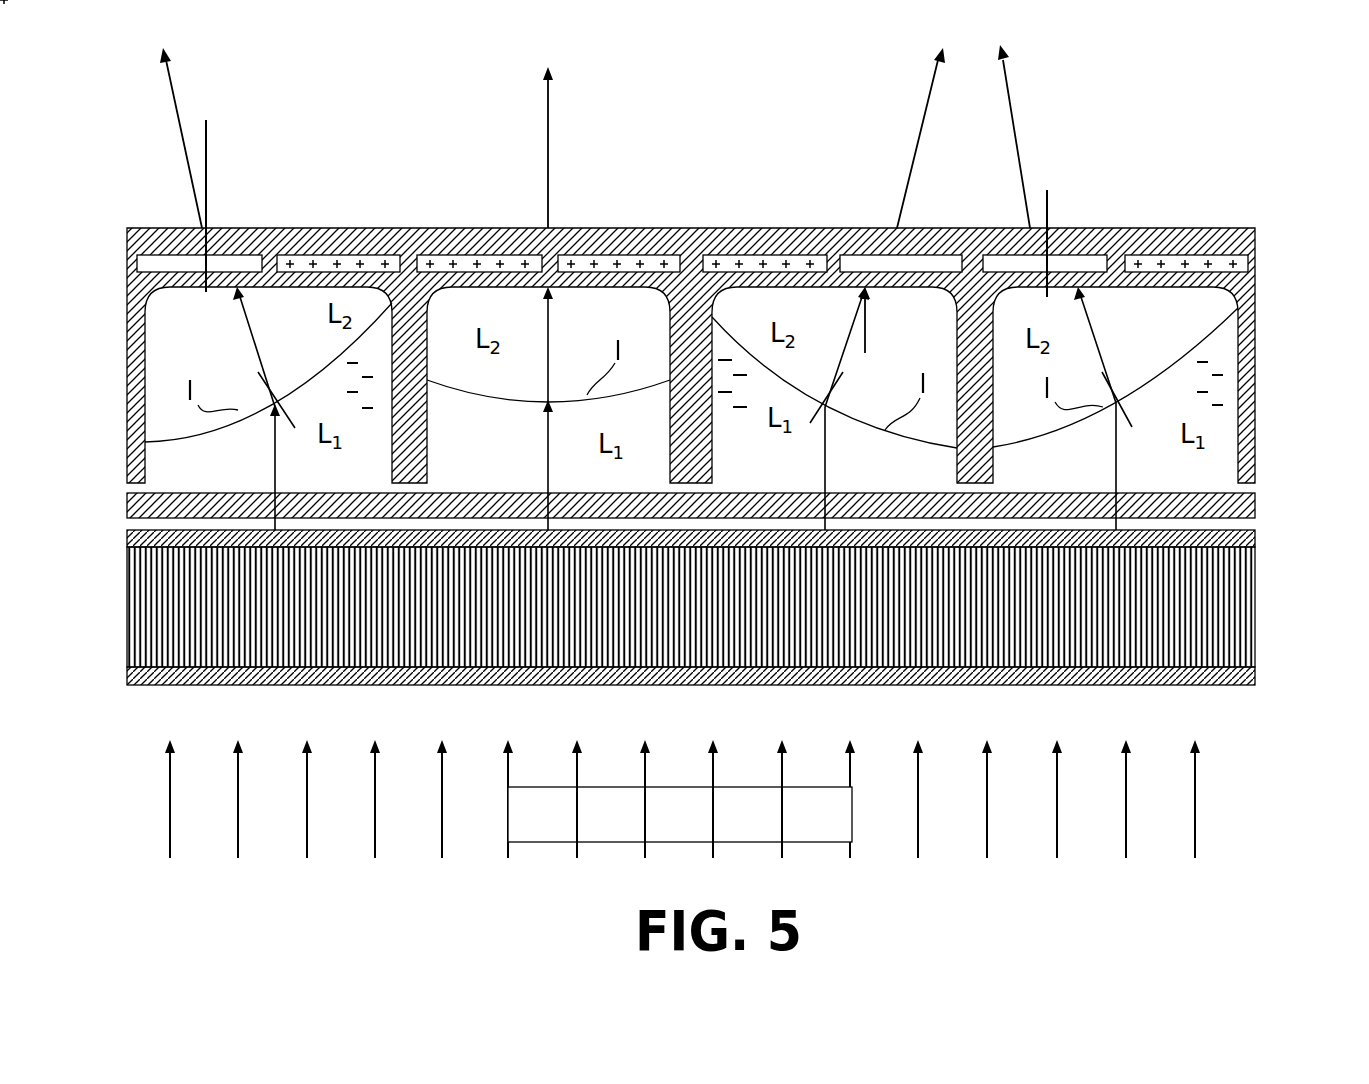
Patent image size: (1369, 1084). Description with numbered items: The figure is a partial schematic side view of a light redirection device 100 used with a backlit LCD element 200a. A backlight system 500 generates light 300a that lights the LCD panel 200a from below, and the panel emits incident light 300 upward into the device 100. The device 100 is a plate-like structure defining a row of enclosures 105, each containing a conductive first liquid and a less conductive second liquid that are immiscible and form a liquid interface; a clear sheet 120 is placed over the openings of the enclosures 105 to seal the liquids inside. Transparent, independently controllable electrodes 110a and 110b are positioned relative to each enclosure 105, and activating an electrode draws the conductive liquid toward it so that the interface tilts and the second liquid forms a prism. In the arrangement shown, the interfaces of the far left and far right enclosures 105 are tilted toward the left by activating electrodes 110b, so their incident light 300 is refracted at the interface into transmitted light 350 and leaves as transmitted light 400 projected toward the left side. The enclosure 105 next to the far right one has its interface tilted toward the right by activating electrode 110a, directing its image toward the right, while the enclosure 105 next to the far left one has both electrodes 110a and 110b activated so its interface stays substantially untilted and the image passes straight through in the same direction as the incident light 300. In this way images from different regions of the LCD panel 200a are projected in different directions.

The light redirection device 100 is at (1163, 190).
The enclosure 105 is at (140, 380).
The electrode 110a is at (242, 228).
The electrode 110b is at (355, 228).
The clear sheet 120 is at (1255, 510).
The LCD element 200a is at (1240, 603).
The incident light 300 is at (275, 487).
The light 300a is at (375, 765).
The transmitted light 350 is at (300, 328).
The transmitted light 400 is at (178, 108).
The backlight system 500 is at (680, 814).